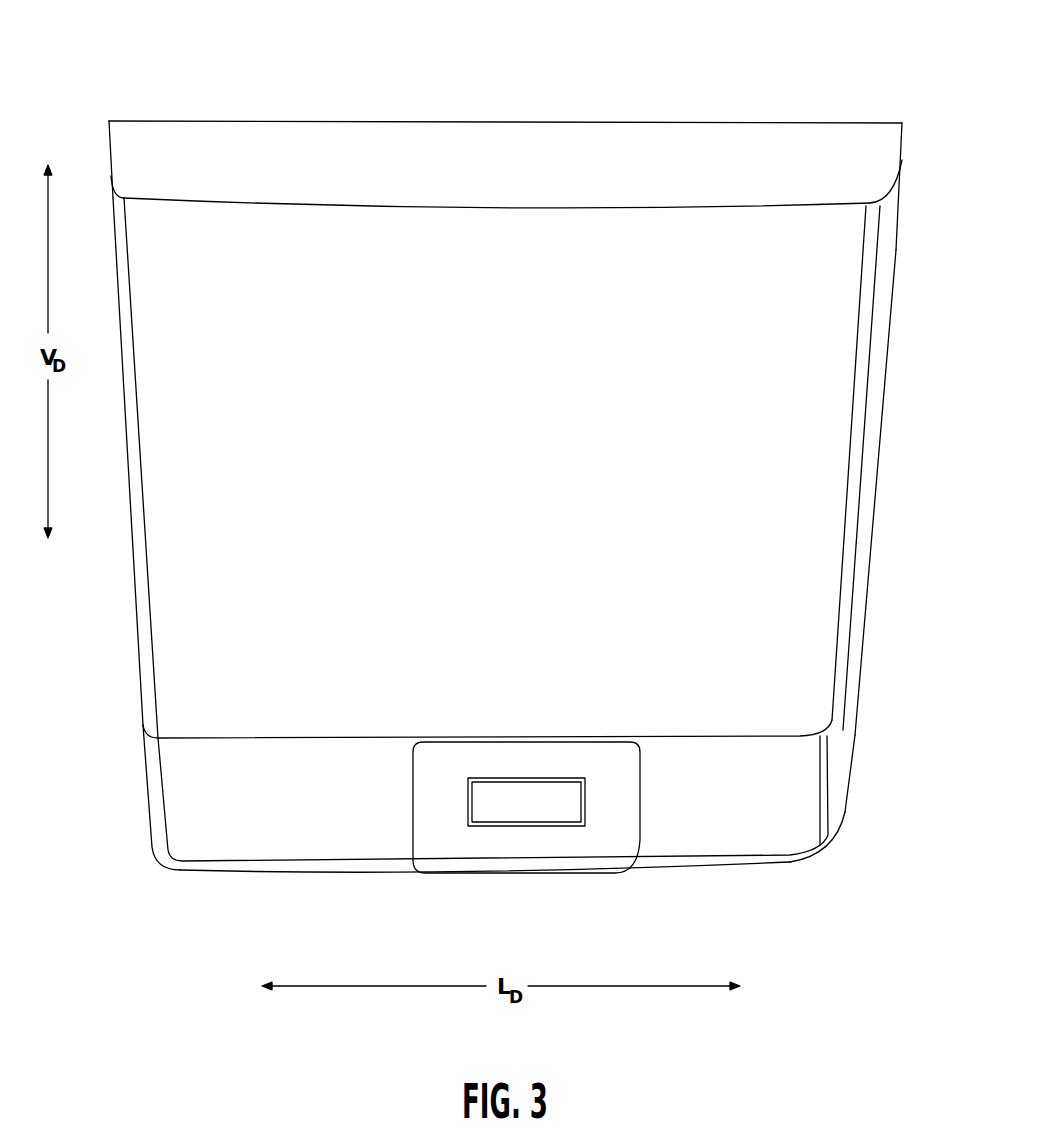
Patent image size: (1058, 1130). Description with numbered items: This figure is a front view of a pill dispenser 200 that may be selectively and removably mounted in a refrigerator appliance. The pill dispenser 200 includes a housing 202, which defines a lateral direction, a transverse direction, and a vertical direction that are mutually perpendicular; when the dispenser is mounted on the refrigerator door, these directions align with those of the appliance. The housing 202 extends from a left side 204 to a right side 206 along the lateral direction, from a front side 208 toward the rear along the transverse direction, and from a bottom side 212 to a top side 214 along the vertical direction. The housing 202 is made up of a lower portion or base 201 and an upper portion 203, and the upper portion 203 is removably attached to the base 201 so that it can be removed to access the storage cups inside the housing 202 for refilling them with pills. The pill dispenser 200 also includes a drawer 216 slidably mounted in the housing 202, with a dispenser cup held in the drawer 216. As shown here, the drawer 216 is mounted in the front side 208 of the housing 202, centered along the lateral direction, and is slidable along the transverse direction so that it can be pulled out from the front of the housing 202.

The pill dispenser 200 is at (100, 73).
The top side 214 is at (697, 143).
The housing 202 is at (98, 658).
The front side 208 is at (521, 486).
The upper portion 203 is at (877, 393).
The right side 206 is at (867, 558).
The left side 204 is at (147, 785).
The base 201 is at (842, 762).
The bottom side 212 is at (739, 865).
The drawer 216 is at (453, 853).